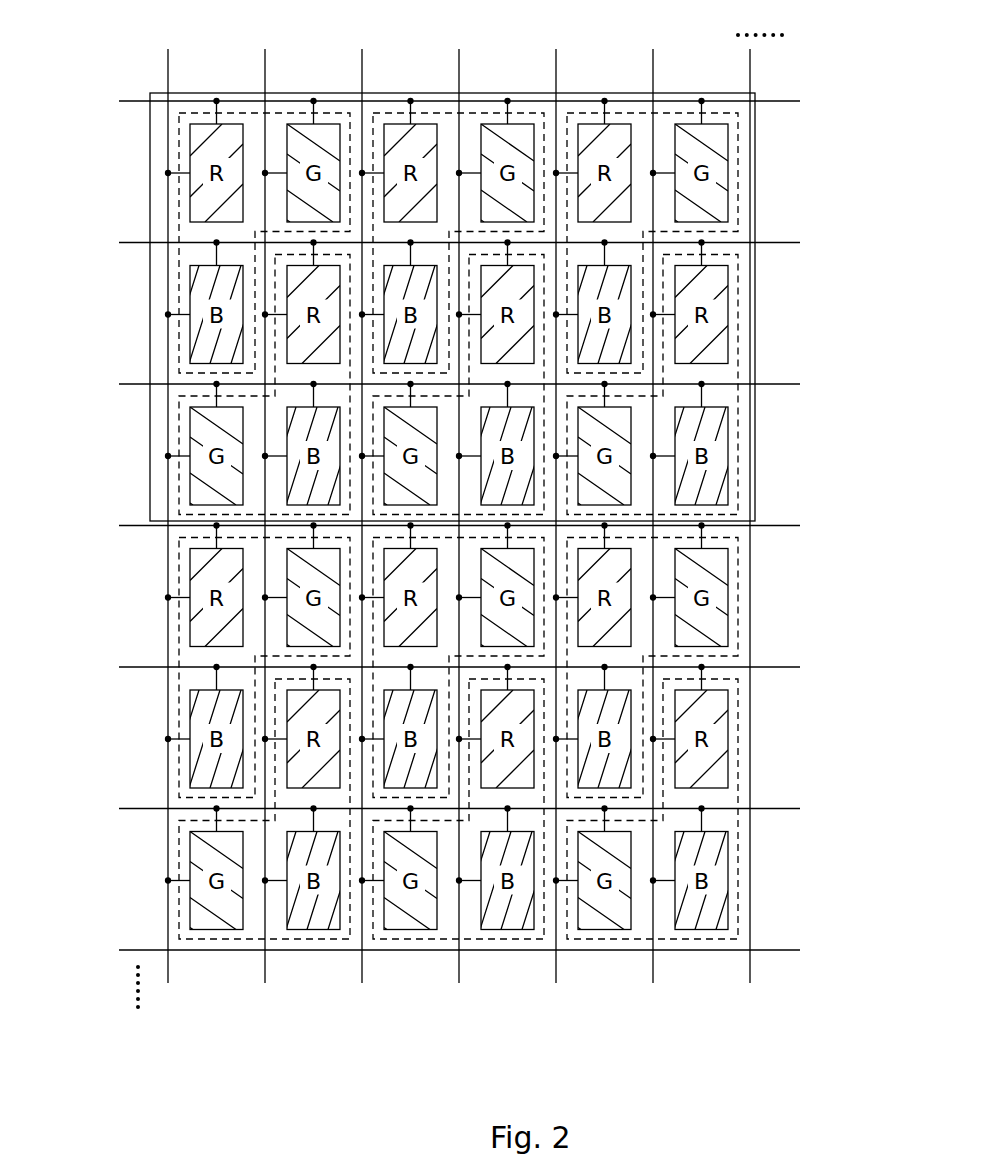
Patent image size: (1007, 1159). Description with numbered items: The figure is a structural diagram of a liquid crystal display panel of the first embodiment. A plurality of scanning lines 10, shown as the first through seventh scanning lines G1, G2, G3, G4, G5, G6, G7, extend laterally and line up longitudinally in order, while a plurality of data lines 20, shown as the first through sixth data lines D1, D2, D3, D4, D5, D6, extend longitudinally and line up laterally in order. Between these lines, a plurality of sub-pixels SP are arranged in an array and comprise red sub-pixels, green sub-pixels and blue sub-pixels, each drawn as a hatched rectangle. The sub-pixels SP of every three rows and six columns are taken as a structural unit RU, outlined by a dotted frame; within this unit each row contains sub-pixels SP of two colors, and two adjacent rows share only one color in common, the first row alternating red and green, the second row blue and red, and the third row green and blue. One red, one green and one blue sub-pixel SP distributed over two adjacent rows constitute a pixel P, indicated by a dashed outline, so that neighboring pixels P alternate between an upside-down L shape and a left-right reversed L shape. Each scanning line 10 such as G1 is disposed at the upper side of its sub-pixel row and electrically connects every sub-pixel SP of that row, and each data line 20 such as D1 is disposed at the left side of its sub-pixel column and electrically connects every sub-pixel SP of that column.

The scanning line 10 is at (770, 102).
The data line 20 is at (750, 78).
The structural unit RU is at (150, 93).
The pixel P is at (180, 229).
The sub-pixel SP is at (728, 208).
The first scanning line G1 is at (417, 101).
The second scanning line G2 is at (438, 243).
The third scanning line G3 is at (438, 384).
The fourth scanning line G4 is at (438, 526).
The fifth scanning line G5 is at (438, 667).
The sixth scanning line G6 is at (438, 809).
The seventh scanning line G7 is at (438, 950).
The first data line D1 is at (168, 499).
The second data line D2 is at (265, 499).
The third data line D3 is at (362, 499).
The fourth data line D4 is at (459, 499).
The fifth data line D5 is at (556, 499).
The sixth data line D6 is at (653, 499).